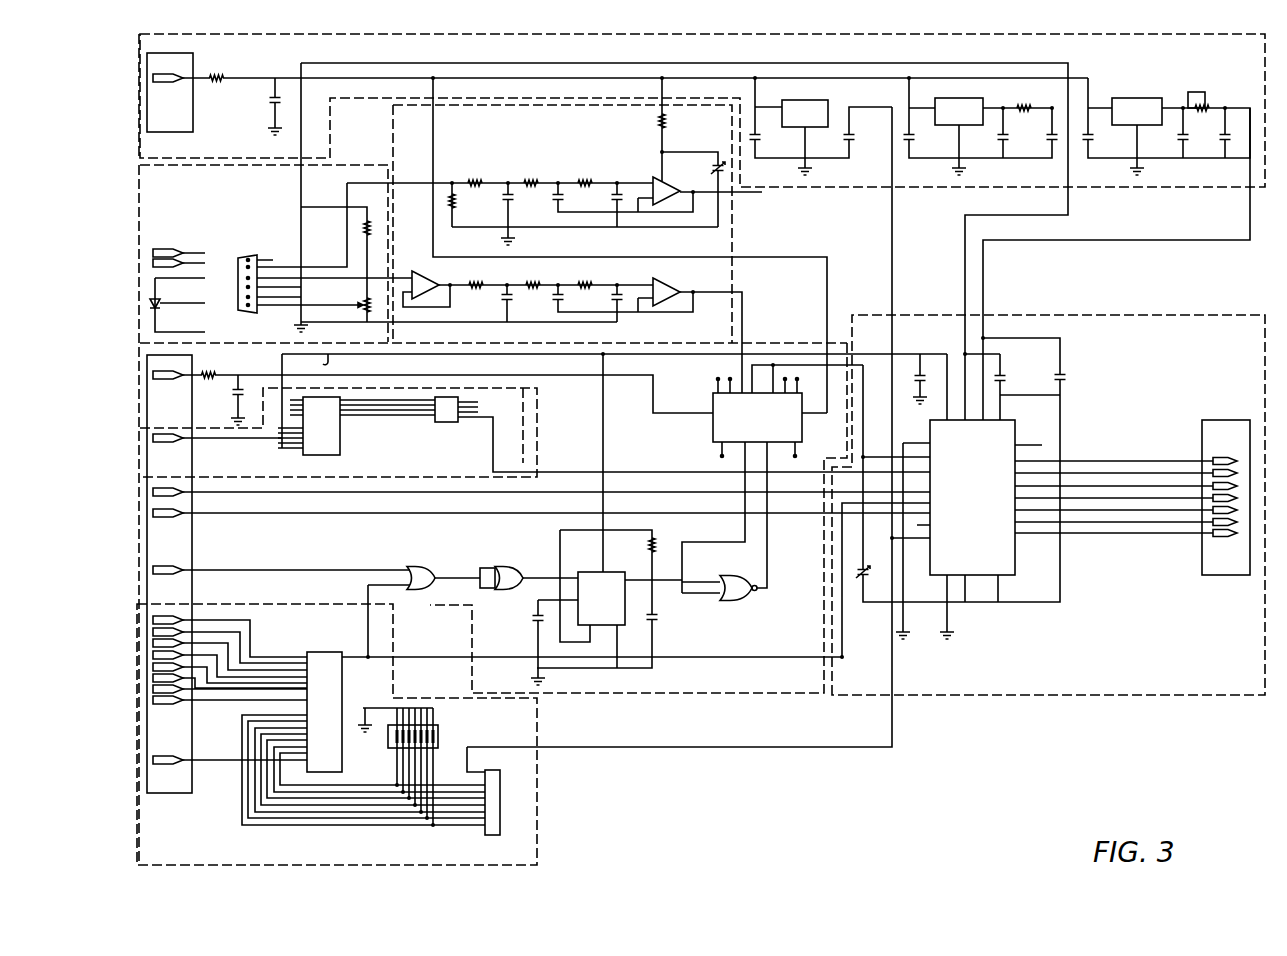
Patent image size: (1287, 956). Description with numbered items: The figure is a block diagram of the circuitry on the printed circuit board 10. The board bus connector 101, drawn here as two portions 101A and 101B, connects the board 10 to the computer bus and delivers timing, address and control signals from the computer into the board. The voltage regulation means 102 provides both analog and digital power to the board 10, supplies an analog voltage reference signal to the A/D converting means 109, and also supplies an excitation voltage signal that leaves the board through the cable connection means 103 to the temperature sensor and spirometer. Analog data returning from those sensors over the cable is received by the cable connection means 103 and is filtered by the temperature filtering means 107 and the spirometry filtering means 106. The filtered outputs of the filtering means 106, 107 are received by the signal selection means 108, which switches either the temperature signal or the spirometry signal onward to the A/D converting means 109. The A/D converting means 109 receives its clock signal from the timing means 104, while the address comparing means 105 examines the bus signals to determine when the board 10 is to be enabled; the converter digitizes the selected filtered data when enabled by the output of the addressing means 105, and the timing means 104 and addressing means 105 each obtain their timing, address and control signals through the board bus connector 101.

The board 10 is at (933, 737).
The board bus connector 101 is at (1228, 427).
The board bus connector portion 101A is at (150, 540).
The board bus connector portion 101B is at (160, 108).
The voltage regulation means 102 is at (1153, 68).
The cable connection means 103 is at (237, 210).
The timing means 104 is at (425, 464).
The addressing means 105 is at (313, 641).
The spirometry filtering means 106 is at (562, 149).
The temperature filtering means 107 is at (693, 337).
The signal selection means 108 is at (662, 452).
The A/D converting means 109 is at (1163, 366).